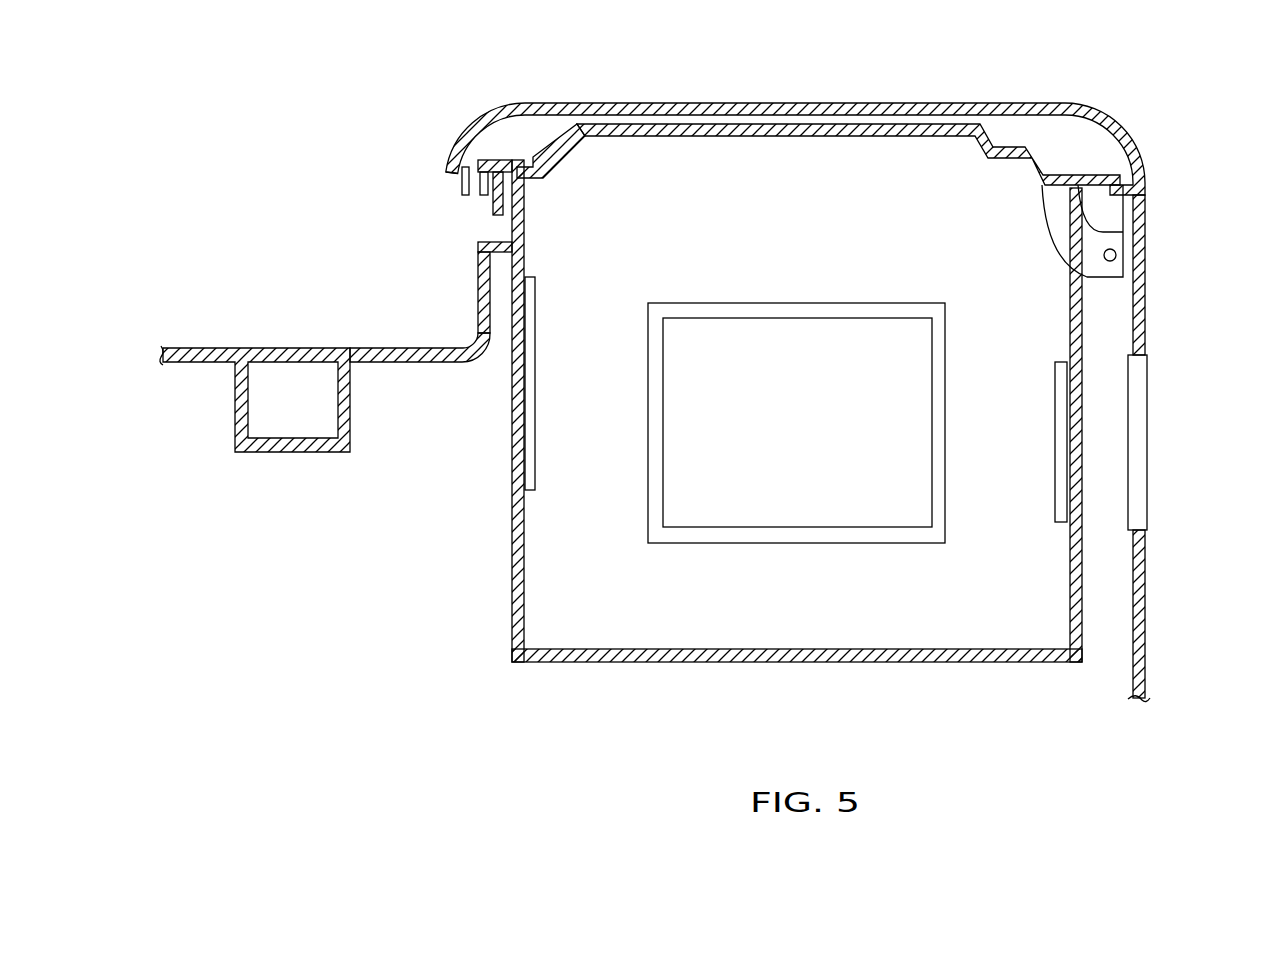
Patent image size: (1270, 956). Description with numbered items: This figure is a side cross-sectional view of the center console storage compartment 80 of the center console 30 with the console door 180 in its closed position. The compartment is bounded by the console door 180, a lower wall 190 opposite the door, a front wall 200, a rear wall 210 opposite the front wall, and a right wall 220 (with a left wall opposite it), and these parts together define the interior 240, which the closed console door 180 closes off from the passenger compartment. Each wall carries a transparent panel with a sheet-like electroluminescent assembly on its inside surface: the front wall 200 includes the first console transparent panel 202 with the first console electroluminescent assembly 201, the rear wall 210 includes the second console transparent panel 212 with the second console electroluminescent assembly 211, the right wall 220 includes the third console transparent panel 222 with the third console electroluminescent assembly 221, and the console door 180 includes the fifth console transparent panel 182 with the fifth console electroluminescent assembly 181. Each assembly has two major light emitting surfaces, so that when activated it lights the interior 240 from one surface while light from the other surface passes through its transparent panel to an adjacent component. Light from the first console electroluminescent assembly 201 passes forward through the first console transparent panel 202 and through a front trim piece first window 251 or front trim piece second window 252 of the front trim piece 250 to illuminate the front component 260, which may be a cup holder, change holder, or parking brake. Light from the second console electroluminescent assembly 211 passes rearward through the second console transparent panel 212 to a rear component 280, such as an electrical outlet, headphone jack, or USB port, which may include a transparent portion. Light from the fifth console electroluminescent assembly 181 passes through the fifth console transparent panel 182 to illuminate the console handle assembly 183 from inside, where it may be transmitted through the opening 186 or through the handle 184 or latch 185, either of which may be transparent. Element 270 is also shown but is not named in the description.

The center console 30 is at (229, 239).
The center console storage compartment 80 is at (1167, 104).
The console door 180 is at (898, 103).
The fifth console electroluminescent assembly 181 is at (552, 168).
The fifth console transparent panel 182 is at (547, 152).
The console handle assembly 183 is at (422, 152).
The handle 184 is at (490, 205).
The latch 185 is at (498, 222).
The opening 186 is at (460, 186).
The lower wall 190 is at (815, 654).
The front wall 200 is at (513, 574).
The first console electroluminescent assembly 201 is at (531, 364).
The first console transparent panel 202 is at (517, 447).
The rear wall 210 is at (1073, 578).
The second console electroluminescent assembly 211 is at (1057, 467).
The second console transparent panel 212 is at (1075, 438).
The right wall 220 is at (998, 188).
The third console electroluminescent assembly 221 is at (755, 367).
The third console transparent panel 222 is at (792, 310).
The interior 240 is at (750, 199).
The front trim piece 250 is at (415, 347).
The front trim piece first window 251 is at (483, 297).
The front trim piece second window 252 is at (345, 390).
The front component 260 is at (291, 383).
The rail 270 is at (1139, 575).
The rear component 280 is at (1139, 472).